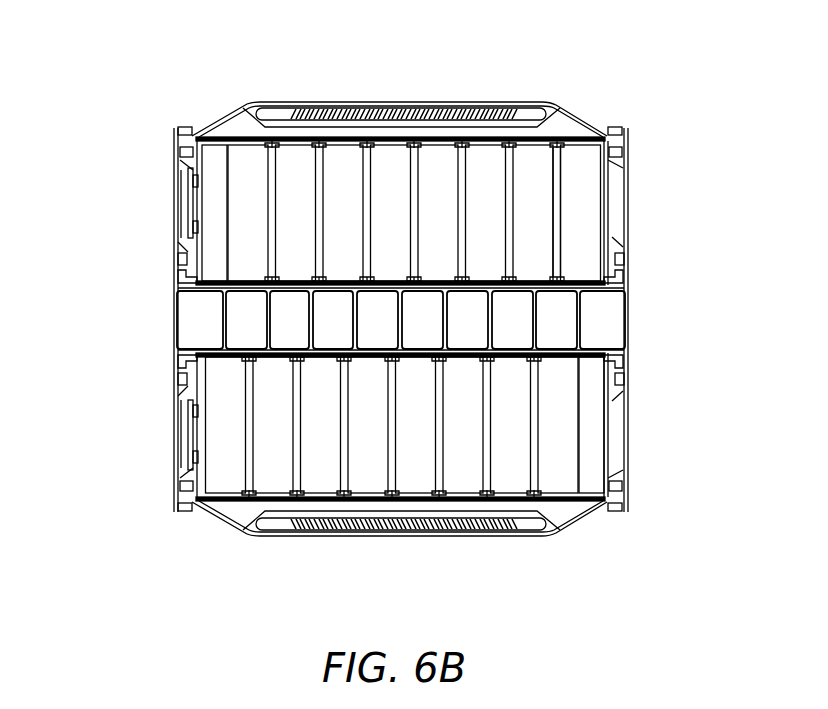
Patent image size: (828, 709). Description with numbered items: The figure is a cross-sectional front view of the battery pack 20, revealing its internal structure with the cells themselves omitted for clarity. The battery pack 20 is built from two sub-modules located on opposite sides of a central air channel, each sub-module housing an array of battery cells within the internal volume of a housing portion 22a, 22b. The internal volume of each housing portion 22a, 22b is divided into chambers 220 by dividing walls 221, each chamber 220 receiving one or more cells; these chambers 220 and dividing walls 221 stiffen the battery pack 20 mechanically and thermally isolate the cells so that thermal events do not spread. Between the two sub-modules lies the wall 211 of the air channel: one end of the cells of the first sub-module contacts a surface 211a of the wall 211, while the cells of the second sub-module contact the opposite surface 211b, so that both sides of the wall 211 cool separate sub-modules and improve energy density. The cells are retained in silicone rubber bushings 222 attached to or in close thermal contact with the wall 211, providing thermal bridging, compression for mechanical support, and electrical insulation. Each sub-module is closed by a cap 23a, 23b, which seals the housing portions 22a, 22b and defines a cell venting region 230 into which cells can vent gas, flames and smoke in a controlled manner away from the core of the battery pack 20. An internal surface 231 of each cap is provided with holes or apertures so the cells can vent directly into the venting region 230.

The battery pack 20 is at (200, 46).
The housing portion 22a is at (186, 170).
The housing portion 22b is at (187, 473).
The cap 23a is at (583, 114).
The cap 23b is at (580, 519).
The wall of the air channel 211 is at (72, 278).
The surface of the wall 211a is at (248, 285).
The opposite surface of the wall 211b is at (248, 352).
The chamber 220 is at (588, 193).
The dividing wall 221 is at (561, 216).
The silicone rubber bushing 222 is at (587, 285).
The cell venting region 230 is at (523, 507).
The internal surface of the module cap 231 is at (238, 506).